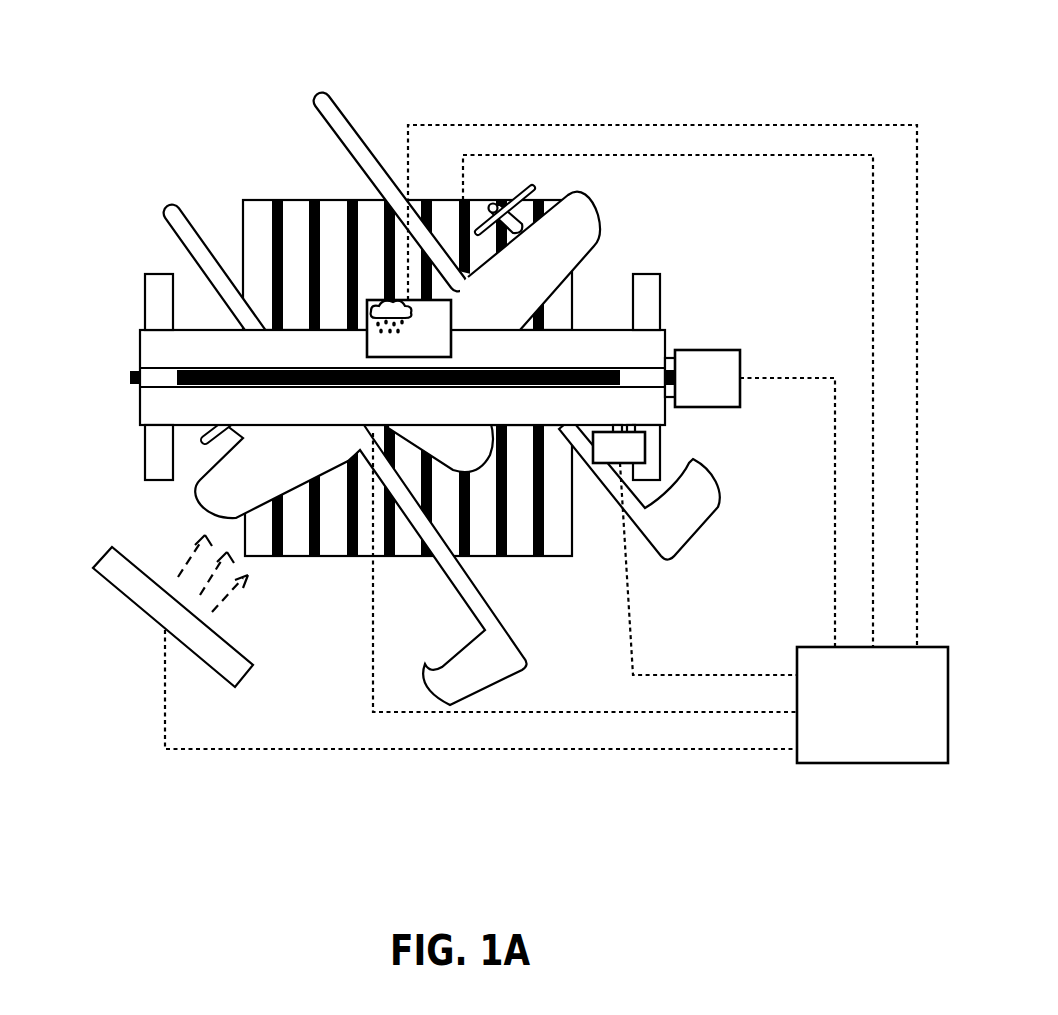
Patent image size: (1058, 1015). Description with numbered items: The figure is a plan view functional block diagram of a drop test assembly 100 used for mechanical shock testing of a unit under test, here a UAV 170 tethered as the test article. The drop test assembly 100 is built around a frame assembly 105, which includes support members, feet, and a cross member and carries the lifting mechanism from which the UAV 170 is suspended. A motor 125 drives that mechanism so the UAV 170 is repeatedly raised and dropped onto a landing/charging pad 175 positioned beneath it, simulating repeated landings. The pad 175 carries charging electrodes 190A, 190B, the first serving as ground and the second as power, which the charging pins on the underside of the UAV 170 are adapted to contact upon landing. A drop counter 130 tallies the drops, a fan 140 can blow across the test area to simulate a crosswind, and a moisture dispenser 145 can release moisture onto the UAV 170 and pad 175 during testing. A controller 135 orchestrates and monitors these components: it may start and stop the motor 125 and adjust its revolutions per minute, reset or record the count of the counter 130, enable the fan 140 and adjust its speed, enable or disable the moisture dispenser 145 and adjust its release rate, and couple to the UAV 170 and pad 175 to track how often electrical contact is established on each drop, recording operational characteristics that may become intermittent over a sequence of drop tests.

The drop test assembly 100 is at (499, 394).
The frame assembly 105 is at (452, 403).
The motor 125 is at (691, 387).
The drop counter 130 is at (603, 456).
The controller 135 is at (856, 730).
The fan 140 is at (135, 597).
The moisture dispenser 145 is at (410, 348).
The UAV 170 is at (407, 410).
The landing/charging pad 175 is at (528, 584).
The charging electrode (ground) 190A is at (295, 556).
The charging electrode (power) 190B is at (331, 556).